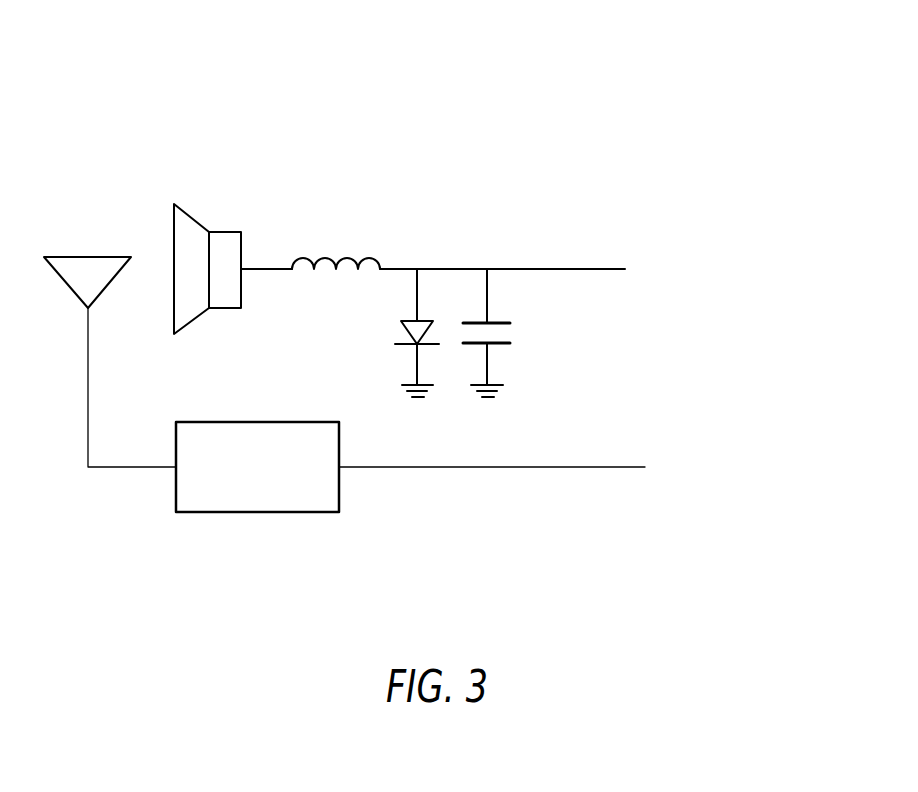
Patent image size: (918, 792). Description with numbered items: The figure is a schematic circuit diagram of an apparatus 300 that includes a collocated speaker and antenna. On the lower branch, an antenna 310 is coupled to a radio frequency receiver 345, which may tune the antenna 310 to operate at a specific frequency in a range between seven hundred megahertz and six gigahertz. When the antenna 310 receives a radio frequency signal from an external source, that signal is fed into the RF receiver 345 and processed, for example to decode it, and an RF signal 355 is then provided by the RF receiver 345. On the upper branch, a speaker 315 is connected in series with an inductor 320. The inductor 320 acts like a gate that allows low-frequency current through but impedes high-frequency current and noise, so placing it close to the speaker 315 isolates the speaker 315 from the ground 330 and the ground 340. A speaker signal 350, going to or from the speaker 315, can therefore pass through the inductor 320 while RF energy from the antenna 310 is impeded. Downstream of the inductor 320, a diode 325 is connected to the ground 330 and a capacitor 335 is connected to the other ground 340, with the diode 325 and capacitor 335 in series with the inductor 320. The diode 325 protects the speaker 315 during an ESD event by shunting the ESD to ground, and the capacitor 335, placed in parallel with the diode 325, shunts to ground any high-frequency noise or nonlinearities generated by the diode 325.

The apparatus 300 is at (600, 118).
The antenna 310 is at (85, 257).
The speaker 315 is at (196, 214).
The inductor 320 is at (347, 257).
The diode 325 is at (401, 323).
The ground 330 is at (402, 390).
The capacitor 335 is at (510, 325).
The ground 340 is at (503, 387).
The RF receiver 345 is at (231, 512).
The speaker signal 350 is at (688, 250).
The RF signal 355 is at (685, 482).